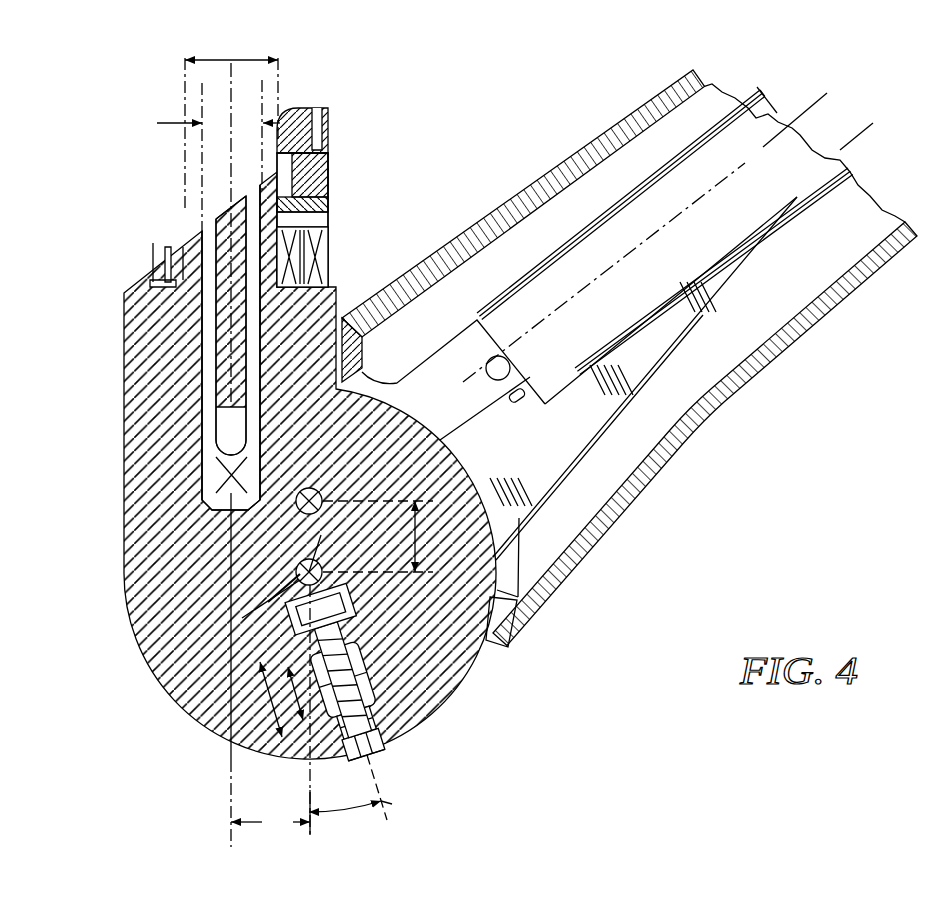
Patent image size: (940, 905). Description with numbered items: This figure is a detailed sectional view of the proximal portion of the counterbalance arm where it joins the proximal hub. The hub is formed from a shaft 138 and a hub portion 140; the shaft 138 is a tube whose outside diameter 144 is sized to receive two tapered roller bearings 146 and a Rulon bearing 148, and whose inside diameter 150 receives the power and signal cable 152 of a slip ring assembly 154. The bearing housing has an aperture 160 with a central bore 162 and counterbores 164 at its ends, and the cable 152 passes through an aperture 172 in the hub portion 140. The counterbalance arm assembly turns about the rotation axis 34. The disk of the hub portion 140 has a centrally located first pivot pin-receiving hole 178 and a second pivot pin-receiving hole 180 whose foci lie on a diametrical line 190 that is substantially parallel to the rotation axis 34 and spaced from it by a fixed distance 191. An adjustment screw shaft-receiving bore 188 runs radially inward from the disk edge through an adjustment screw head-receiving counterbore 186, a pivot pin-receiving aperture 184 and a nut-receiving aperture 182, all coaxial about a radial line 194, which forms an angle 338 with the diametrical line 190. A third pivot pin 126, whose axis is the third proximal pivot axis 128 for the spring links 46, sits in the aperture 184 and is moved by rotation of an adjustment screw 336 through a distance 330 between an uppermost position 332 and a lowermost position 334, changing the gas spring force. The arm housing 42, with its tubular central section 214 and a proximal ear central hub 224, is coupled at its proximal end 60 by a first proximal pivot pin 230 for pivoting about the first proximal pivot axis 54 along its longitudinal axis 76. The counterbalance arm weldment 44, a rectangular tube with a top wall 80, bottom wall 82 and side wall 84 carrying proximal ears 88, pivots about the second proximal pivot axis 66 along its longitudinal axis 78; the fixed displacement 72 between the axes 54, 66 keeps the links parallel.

The rotation axis 34 is at (226, 797).
The arm housing 42 is at (607, 134).
The counterbalance arm weldment 44 is at (687, 263).
The spring links 46 is at (560, 477).
The first proximal pivot axis 54 is at (268, 602).
The proximal end 60 is at (264, 757).
The second proximal pivot axis 66 is at (296, 500).
The displacement 72 is at (378, 536).
The longitudinal axis 76 is at (865, 137).
The longitudinal axis 78 is at (810, 108).
The top wall 80 is at (703, 130).
The bottom wall 82 is at (808, 206).
The side wall 84 is at (770, 120).
The proximal ears 88 is at (432, 371).
The third pivot pin 126 is at (368, 684).
The third proximal pivot axis 128 is at (380, 712).
The shaft 138 is at (198, 230).
The hub portion 140 is at (135, 532).
The outside diameter 144 is at (258, 58).
The tapered roller bearings 146 is at (160, 268).
The Rulon bearing 148 is at (279, 137).
The inside diameter 150 is at (178, 118).
The power and signal cable 152 is at (223, 348).
The slip ring assembly 154 is at (210, 325).
The aperture 160 is at (285, 186).
The central bore 162 is at (288, 221).
The counterbores 164 is at (330, 257).
The aperture 172 is at (210, 379).
The first pivot pin-receiving hole 178 is at (297, 566).
The second pivot pin-receiving hole 180 is at (302, 488).
The nut-receiving aperture 182 is at (364, 603).
The pivot pin-receiving aperture 184 is at (358, 662).
The adjustment screw head-receiving counterbore 186 is at (389, 758).
The adjustment screw shaft-receiving bore 188 is at (262, 697).
The diametrical line 190 is at (307, 790).
The distance 191 is at (270, 822).
The radial line 194 is at (388, 808).
The tubular central section 214 is at (850, 282).
The central hub 224 is at (328, 546).
The first proximal pivot pin 230 is at (242, 618).
The distance 330 is at (280, 734).
The uppermost position 332 is at (352, 641).
The lowermost position 334 is at (380, 740).
The adjustment screw 336 is at (362, 787).
The angle 338 is at (348, 804).